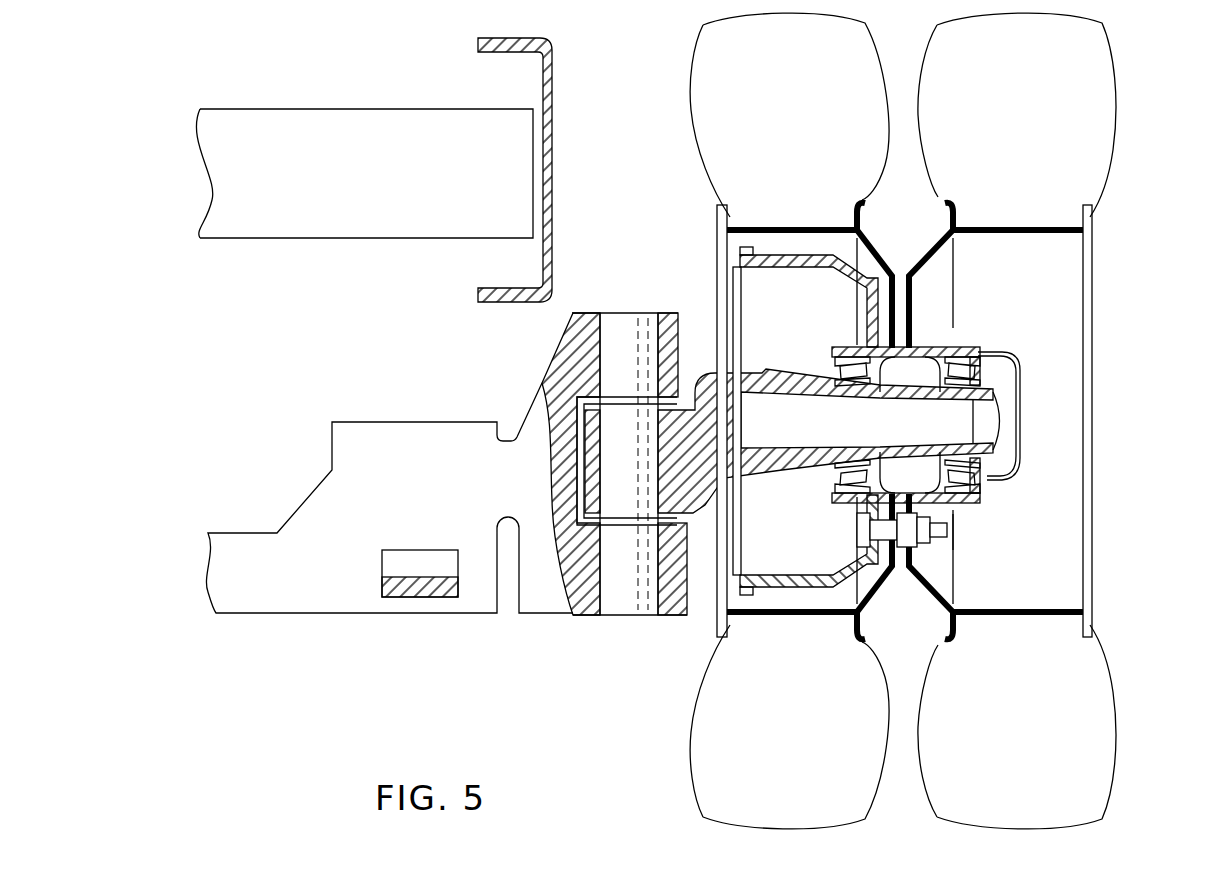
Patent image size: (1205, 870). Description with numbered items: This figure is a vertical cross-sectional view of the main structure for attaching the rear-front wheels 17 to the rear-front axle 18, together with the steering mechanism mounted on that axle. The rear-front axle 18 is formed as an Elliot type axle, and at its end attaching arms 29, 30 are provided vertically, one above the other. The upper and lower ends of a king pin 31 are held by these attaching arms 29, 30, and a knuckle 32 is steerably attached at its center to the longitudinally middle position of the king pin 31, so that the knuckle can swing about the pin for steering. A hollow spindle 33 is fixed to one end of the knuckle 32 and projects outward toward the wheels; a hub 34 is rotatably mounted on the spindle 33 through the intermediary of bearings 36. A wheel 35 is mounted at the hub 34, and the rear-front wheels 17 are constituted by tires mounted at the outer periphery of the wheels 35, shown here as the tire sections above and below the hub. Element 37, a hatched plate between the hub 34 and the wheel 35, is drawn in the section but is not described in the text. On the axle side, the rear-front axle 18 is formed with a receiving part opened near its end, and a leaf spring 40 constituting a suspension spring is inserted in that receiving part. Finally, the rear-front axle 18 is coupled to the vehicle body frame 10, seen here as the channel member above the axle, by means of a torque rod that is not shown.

The vehicle body frame 10 is at (552, 70).
The rear-front wheels 17 is at (708, 62).
The rear-front axle 18 is at (293, 603).
The attaching arm 29 is at (670, 313).
The attaching arm 30 is at (675, 615).
The king pin 31 is at (615, 313).
The knuckle 32 is at (688, 503).
The hollow spindle 33 is at (1030, 463).
The hub 34 is at (948, 340).
The wheel 35 is at (925, 252).
The bearings 36 is at (825, 467).
The wheel disc 37 is at (785, 253).
The leaf spring 40 is at (418, 597).